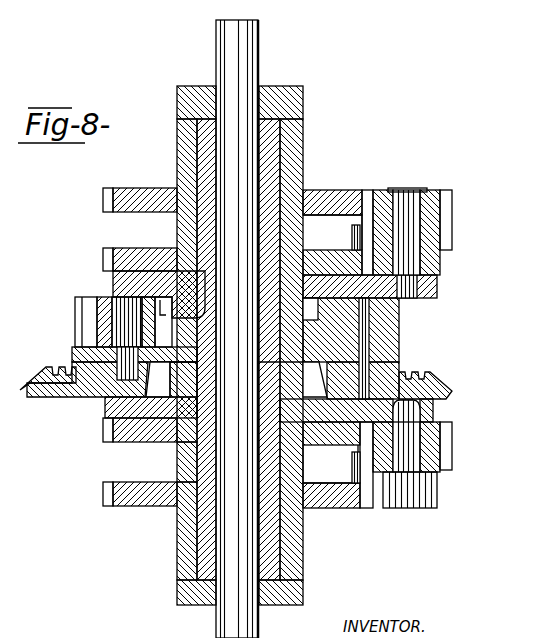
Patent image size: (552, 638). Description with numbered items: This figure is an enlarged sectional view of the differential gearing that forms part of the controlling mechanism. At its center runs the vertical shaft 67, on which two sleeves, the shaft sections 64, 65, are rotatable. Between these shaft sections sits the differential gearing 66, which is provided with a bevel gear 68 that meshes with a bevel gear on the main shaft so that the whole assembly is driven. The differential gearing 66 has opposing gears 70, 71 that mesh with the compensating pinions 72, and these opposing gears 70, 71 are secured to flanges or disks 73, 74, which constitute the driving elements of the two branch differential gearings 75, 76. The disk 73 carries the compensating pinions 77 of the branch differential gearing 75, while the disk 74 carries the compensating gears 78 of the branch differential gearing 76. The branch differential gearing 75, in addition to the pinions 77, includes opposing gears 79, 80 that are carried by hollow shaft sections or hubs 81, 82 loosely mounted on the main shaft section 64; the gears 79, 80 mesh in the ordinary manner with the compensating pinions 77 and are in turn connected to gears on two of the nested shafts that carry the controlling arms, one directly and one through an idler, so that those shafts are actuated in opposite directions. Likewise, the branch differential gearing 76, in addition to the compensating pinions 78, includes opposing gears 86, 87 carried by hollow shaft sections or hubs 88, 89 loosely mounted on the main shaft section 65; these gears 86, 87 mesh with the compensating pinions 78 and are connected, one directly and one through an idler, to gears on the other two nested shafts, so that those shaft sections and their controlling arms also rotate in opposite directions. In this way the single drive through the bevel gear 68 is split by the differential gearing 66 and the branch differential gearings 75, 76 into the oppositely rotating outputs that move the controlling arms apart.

The shaft section 64 is at (197, 535).
The shaft section 65 is at (209, 225).
The differential gearing 66 is at (95, 342).
The vertical shaft 67 is at (224, 50).
The bevel gear 68 is at (52, 398).
The opposing gear 70 is at (309, 373).
The opposing gear 71 is at (385, 305).
The compensating pinions 72 is at (92, 312).
The flange or disk 73 is at (126, 442).
The flange or disk 74 is at (113, 282).
The branch differential gearing 75 is at (334, 492).
The branch differential gearing 76 is at (345, 258).
The compensating pinions 77 is at (437, 490).
The compensating gears 78 is at (395, 250).
The opposing gear 79 is at (122, 506).
The opposing gear 80 is at (134, 419).
The hollow shaft section or hub 81 is at (177, 556).
The hollow shaft section or hub 82 is at (183, 470).
The opposing gear 86 is at (125, 253).
The opposing gear 87 is at (108, 201).
The hollow shaft section or hub 88 is at (186, 240).
The hollow shaft section or hub 89 is at (182, 172).